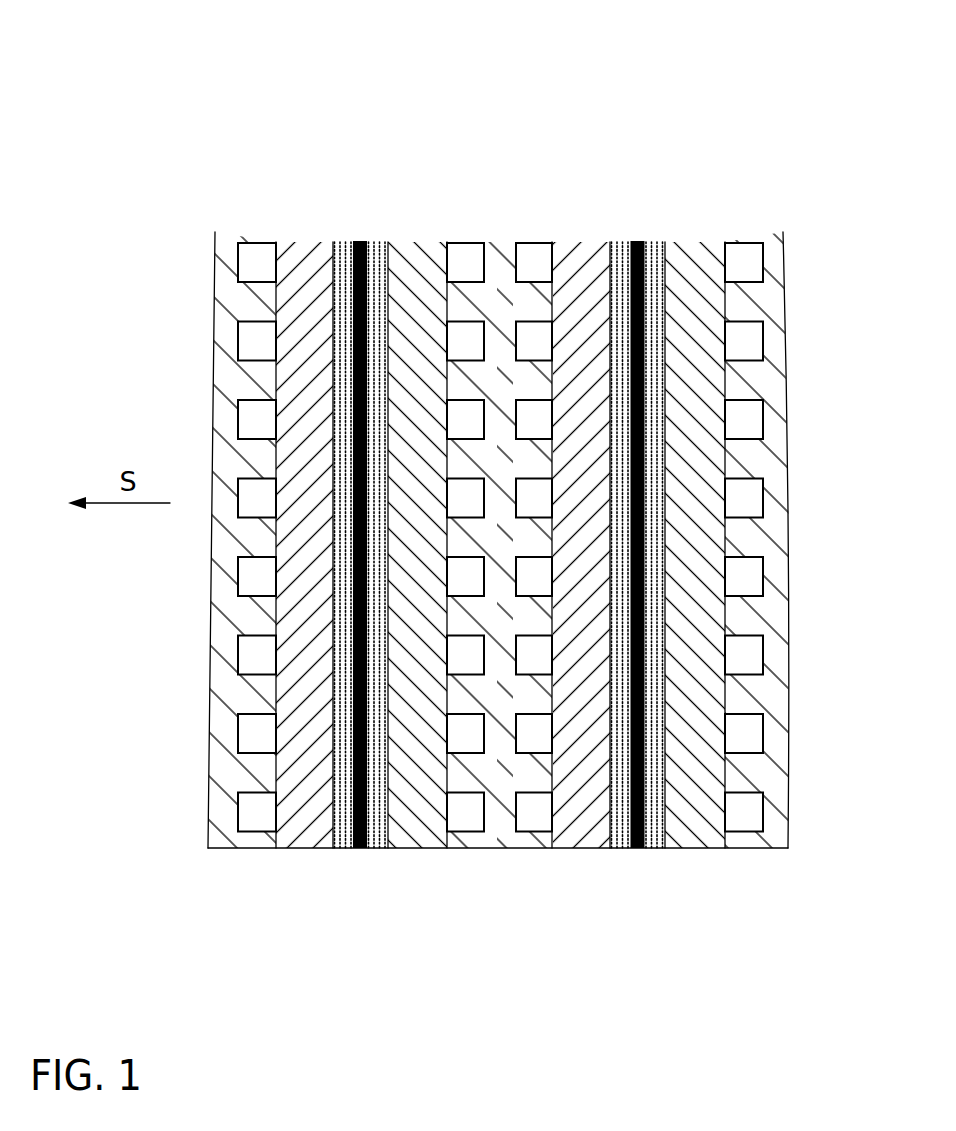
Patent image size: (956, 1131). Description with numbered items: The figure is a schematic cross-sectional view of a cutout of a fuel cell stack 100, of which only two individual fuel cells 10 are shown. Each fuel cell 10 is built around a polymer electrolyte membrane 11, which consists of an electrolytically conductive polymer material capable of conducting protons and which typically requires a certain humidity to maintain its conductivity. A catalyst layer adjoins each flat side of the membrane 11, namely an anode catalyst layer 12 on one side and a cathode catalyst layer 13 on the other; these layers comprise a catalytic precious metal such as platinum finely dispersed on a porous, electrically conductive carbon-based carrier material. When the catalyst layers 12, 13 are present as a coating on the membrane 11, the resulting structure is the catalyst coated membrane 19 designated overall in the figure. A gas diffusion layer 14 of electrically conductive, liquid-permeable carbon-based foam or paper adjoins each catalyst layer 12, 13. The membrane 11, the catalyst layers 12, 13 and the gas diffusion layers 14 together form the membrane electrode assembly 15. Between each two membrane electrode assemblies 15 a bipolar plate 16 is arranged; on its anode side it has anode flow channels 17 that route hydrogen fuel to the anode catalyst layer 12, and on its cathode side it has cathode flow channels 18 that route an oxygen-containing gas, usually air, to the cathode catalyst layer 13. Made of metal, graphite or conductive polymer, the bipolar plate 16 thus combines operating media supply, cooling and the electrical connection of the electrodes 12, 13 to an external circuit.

The fuel cell stack 100 is at (186, 98).
The fuel cell 10 is at (788, 168).
The membrane electrode assembly 15 is at (448, 233).
The catalyst coated membrane 19 is at (303, 938).
The polymer electrolyte membrane 11 is at (359, 838).
The anode catalyst layer 12 is at (344, 829).
The cathode catalyst layer 13 is at (377, 829).
The gas diffusion layer 14 is at (305, 824).
The bipolar plate 16 is at (220, 815).
The anode flow channels 17 is at (253, 739).
The cathode flow channels 18 is at (750, 738).